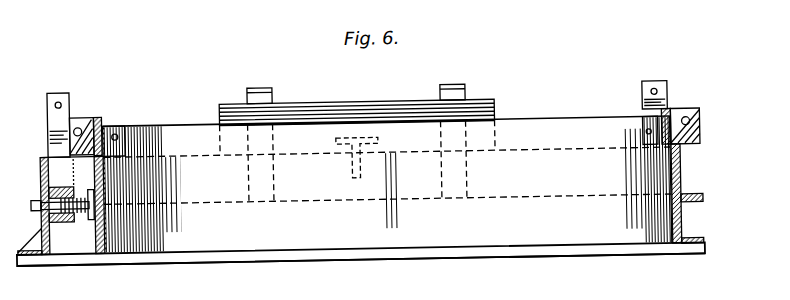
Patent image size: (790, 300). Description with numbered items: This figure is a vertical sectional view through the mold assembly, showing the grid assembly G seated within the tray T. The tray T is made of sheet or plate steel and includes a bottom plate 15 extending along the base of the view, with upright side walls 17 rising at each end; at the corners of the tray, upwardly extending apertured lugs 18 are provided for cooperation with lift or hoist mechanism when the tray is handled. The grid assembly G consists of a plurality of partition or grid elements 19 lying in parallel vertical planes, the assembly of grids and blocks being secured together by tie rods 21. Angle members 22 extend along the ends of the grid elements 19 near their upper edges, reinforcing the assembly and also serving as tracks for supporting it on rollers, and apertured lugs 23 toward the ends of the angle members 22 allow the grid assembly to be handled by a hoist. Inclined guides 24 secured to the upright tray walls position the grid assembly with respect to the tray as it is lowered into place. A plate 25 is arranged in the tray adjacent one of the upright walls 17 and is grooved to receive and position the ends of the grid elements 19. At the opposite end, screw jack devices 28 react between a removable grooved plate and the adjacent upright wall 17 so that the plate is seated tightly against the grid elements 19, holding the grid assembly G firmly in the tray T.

The bottom plate 15 is at (167, 263).
The upright side wall 17 is at (42, 171).
The apertured lug 18 is at (50, 108).
The grid element 19 is at (288, 243).
The tie rod 21 is at (125, 127).
The angle member 22 is at (95, 121).
The apertured lug 23 is at (82, 119).
The inclined guide 24 is at (402, 109).
The plate 25 is at (670, 230).
The screw jack device 28 is at (68, 228).
The grid assembly G is at (558, 128).
The tray T is at (682, 184).